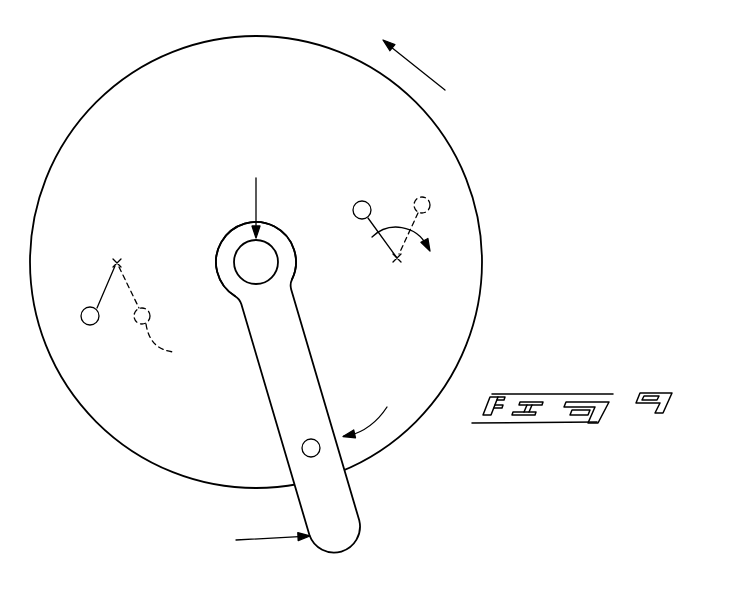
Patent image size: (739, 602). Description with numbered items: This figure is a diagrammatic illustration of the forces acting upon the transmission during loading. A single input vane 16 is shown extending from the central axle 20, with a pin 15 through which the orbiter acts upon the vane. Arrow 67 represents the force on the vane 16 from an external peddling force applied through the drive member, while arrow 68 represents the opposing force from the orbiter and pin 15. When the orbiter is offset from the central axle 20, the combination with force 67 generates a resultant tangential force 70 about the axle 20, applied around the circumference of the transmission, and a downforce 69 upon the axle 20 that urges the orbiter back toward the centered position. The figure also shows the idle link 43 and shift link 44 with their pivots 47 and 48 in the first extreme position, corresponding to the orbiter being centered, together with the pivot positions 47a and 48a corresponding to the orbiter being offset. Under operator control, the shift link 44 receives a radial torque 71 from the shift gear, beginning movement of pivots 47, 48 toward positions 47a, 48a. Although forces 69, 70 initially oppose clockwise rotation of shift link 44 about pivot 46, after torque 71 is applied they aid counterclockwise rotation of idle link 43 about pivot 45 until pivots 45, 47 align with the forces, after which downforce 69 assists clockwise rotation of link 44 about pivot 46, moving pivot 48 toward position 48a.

The pin 15 is at (302, 442).
The input vane 16 is at (360, 540).
The central axle 20 is at (222, 282).
The idle link 43 is at (103, 291).
The shift link 44 is at (392, 254).
The pivot 45 is at (122, 262).
The pivot 46 is at (398, 264).
The pivot 47 is at (97, 324).
The pivot position 47a is at (217, 367).
The pivot 48 is at (354, 205).
The pivot position 48a is at (414, 197).
The arrow 67 is at (259, 540).
The arrow 68 is at (373, 420).
The downforce 69 is at (256, 193).
The tangential force 70 is at (428, 70).
The radial torque 71 is at (393, 228).